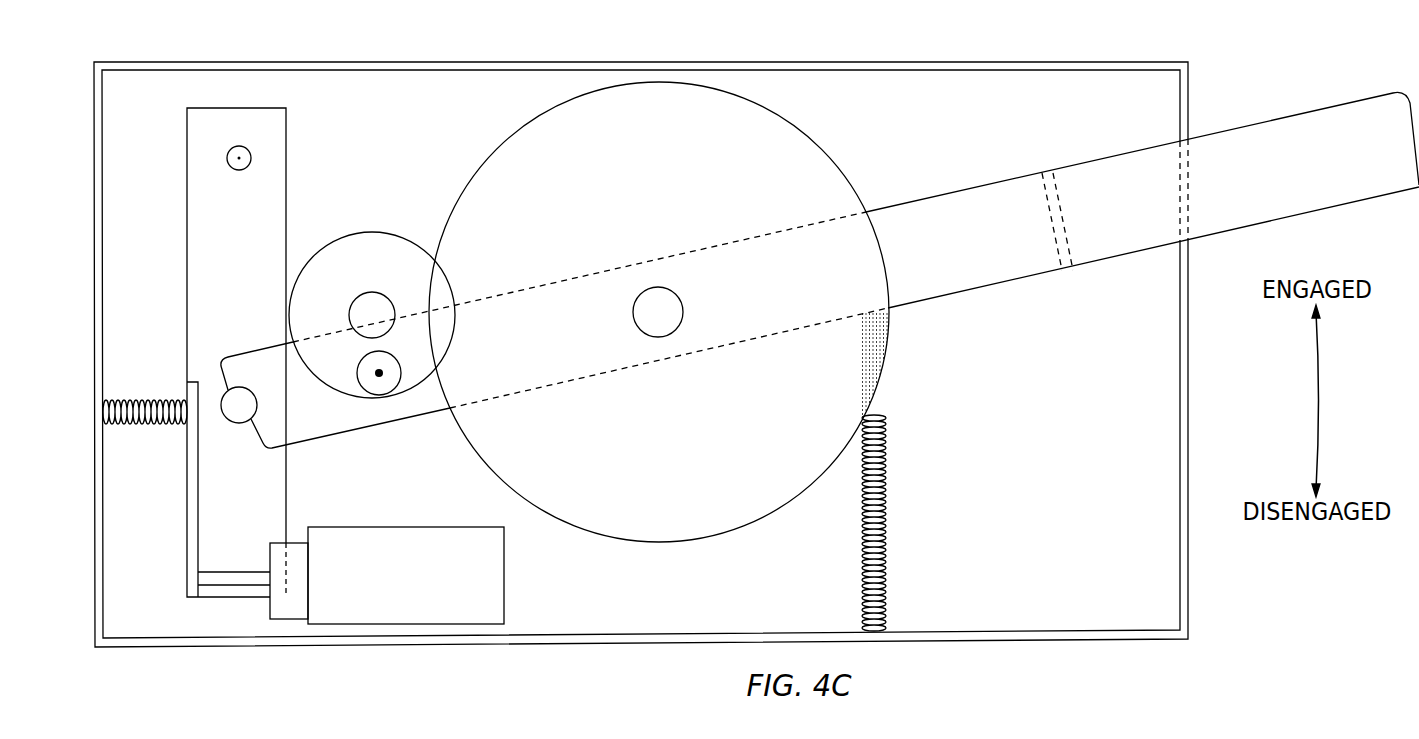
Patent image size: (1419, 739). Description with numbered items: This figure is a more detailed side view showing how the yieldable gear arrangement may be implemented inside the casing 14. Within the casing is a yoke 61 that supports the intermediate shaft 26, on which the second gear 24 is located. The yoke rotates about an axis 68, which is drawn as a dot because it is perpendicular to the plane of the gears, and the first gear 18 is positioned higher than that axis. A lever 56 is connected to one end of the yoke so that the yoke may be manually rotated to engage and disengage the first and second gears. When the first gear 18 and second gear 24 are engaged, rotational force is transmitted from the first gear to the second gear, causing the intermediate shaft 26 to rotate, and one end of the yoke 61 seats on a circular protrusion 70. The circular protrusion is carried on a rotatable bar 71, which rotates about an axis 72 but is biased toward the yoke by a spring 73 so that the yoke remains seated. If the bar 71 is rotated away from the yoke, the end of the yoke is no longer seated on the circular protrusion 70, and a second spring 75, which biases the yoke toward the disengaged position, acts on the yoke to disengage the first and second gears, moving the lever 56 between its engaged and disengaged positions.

The casing 14 is at (497, 575).
The first gear 18 is at (365, 245).
The second gear 24 is at (670, 537).
The intermediate shaft 26 is at (662, 323).
The lever 56 is at (1320, 205).
The yoke 61 is at (765, 332).
The axis 68 is at (379, 376).
The circular protrusion 70 is at (238, 418).
The rotatable bar 71 is at (280, 198).
The axis 72 is at (237, 165).
The spring 73 is at (122, 402).
The spring 75 is at (890, 463).